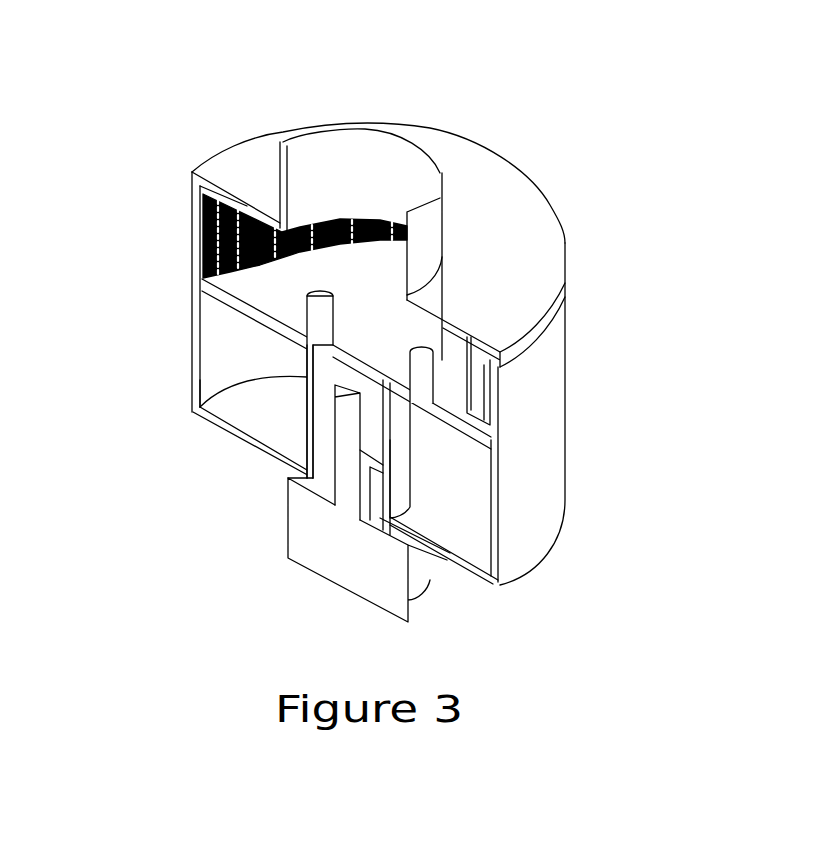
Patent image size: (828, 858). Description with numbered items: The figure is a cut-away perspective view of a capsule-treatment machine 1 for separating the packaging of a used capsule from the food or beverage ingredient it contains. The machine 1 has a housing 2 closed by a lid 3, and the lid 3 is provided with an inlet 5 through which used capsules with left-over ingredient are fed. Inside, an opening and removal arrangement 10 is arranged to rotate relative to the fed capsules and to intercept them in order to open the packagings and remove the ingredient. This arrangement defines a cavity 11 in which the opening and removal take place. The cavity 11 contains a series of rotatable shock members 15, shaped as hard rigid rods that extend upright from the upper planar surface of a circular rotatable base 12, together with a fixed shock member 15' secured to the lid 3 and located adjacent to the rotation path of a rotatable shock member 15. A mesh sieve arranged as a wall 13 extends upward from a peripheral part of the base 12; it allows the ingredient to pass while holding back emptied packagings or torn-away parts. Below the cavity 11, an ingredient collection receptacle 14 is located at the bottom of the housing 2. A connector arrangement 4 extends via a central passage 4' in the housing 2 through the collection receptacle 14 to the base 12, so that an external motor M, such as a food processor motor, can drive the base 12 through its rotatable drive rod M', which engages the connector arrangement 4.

The capsule-treatment machine 1 is at (312, 81).
The housing 2 is at (553, 450).
The lid 3 is at (538, 233).
The inlet 5 is at (383, 163).
The opening and removal arrangement 10 is at (448, 439).
The cavity 11 is at (266, 277).
The rotatable base 12 is at (262, 316).
The mesh wall 13 is at (200, 232).
The ingredient collection receptacle 14 is at (247, 405).
The rotatable shock members 15 is at (370, 385).
The fixed shock member 15' is at (417, 360).
The connector arrangement 4 is at (306, 461).
The central passage 4' is at (283, 411).
The motor M is at (369, 550).
The drive rod M' is at (276, 532).